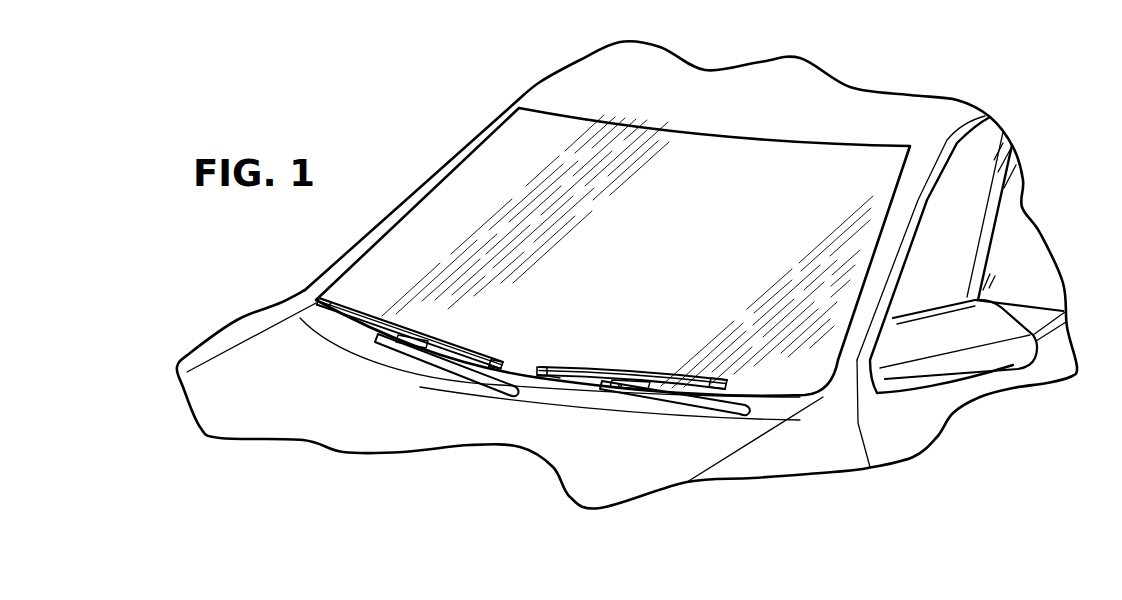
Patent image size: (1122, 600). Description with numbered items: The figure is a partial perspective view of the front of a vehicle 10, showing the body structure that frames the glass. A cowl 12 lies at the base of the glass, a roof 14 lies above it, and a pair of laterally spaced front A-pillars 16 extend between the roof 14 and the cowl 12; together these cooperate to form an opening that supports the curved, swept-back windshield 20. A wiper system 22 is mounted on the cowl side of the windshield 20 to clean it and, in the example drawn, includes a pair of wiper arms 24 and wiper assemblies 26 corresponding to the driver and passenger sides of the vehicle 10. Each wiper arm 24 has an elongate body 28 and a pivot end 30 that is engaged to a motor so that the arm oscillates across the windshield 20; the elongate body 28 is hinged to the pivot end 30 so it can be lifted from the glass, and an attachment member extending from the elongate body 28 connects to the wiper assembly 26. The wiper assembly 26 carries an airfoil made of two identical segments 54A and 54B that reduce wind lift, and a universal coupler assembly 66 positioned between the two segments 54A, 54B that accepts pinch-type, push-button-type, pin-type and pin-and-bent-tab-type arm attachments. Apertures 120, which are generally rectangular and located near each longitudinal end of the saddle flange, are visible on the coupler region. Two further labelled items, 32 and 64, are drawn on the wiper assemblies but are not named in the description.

The vehicle 10 is at (393, 180).
The cowl 12 is at (308, 322).
The roof 14 is at (813, 92).
The A-pillars 16 is at (503, 120).
The windshield 20 is at (702, 160).
The wiper system 22 is at (337, 327).
The wiper arm 24 is at (467, 383).
The wiper assembly 26 is at (367, 340).
The elongate body 28 is at (453, 367).
The pivot end 30 is at (510, 380).
The blade connector 32 is at (387, 347).
The airfoil segment 54A is at (557, 392).
The airfoil segment 54B is at (705, 393).
The second wiper blade 64 is at (540, 388).
The universal coupler assembly 66 is at (595, 393).
The apertures 120 is at (615, 397).